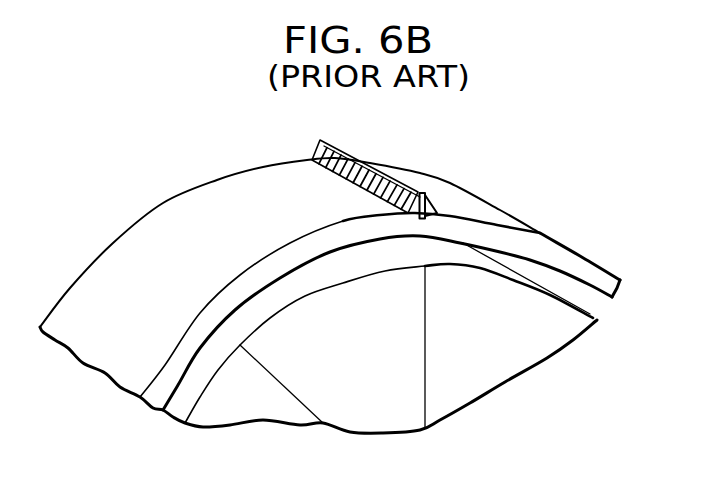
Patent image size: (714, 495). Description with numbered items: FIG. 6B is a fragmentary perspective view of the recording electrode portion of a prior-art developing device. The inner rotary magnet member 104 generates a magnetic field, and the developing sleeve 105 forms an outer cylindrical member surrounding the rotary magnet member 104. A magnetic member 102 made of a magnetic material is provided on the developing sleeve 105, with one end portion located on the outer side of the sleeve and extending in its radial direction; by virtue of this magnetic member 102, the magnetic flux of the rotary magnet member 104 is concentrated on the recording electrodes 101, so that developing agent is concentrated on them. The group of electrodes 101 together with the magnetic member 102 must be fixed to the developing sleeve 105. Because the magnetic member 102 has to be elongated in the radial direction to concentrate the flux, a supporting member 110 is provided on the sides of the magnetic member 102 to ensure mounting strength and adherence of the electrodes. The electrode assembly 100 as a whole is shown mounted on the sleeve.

The comb-shaped tooth array / recording head assembly 100 is at (340, 161).
The recording electrodes 101 is at (339, 176).
The magnetic member 102 is at (423, 192).
The inner rotary magnet member 104 is at (591, 312).
The developing sleeve 105 is at (557, 250).
The supporting member 110 is at (434, 205).